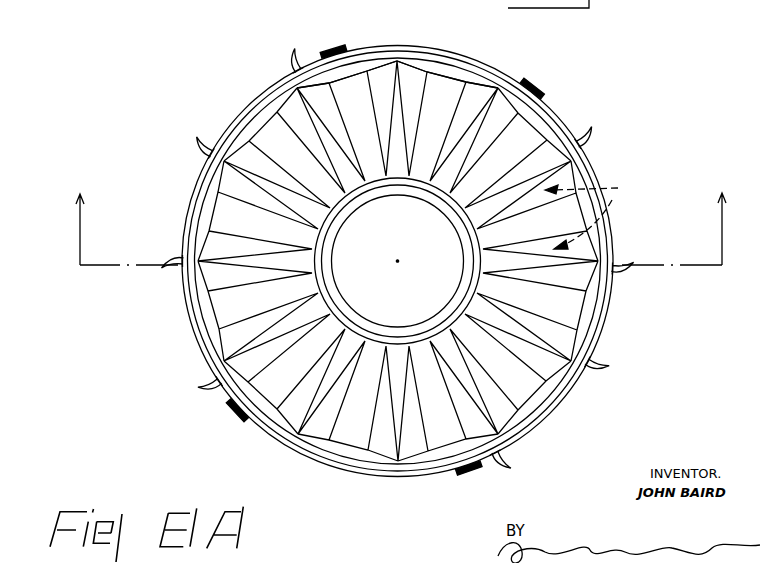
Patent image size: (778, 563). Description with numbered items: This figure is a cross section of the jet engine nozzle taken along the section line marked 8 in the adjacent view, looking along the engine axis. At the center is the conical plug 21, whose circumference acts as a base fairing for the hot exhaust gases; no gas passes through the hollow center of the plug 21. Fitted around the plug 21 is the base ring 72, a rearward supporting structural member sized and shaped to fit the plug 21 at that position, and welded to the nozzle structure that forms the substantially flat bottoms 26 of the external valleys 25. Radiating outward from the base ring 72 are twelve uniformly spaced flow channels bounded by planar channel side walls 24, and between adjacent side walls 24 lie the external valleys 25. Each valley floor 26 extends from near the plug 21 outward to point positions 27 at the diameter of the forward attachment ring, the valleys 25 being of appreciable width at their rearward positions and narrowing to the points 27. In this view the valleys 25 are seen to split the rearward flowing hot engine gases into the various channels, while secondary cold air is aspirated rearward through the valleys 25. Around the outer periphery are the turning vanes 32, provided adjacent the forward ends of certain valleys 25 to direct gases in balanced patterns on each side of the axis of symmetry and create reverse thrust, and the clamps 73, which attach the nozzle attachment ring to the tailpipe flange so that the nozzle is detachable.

The section line 8-8 view direction 8 is at (400, 217).
The plug 21 is at (462, 270).
The planar channel side walls 24 is at (250, 152).
The external valleys 25 is at (630, 172).
The valley floor 26 is at (469, 140).
The point positions 27 is at (393, 466).
The turning vanes 32 is at (293, 62).
The base ring 72 is at (440, 192).
The clamps 73 is at (350, 32).